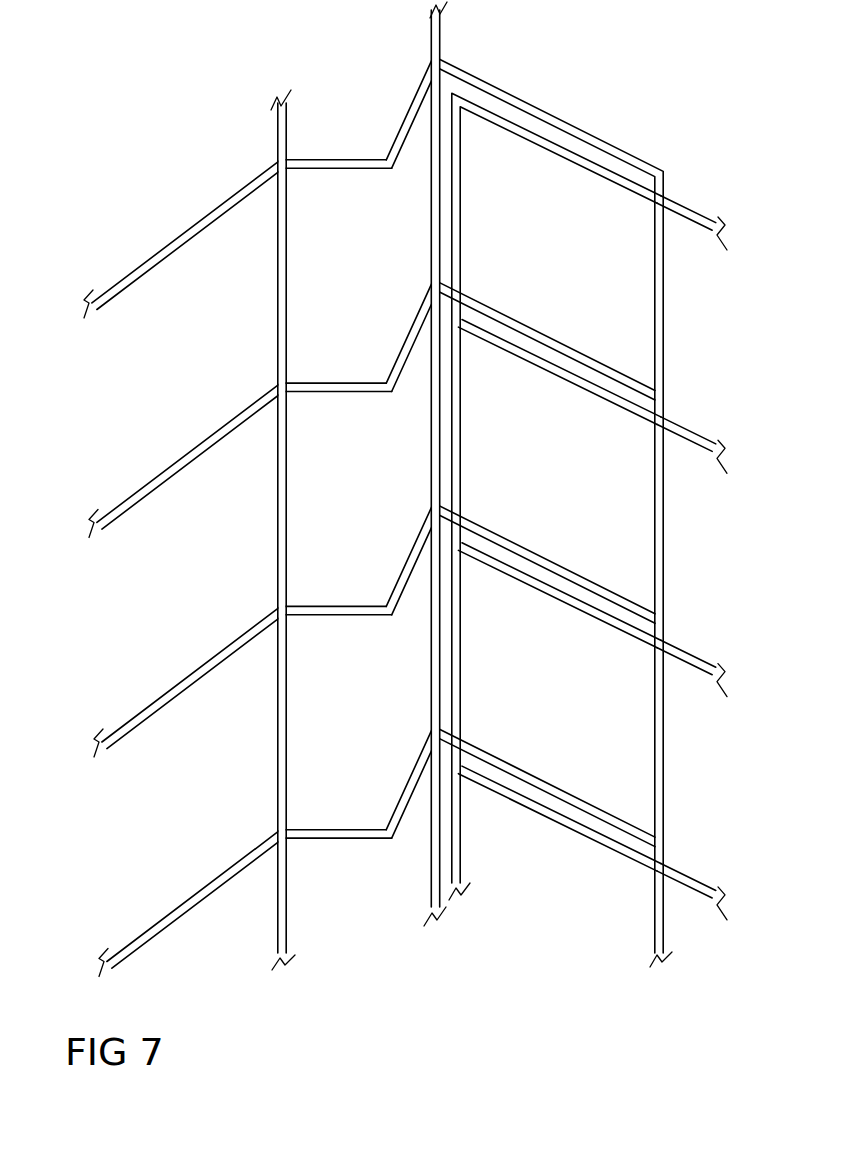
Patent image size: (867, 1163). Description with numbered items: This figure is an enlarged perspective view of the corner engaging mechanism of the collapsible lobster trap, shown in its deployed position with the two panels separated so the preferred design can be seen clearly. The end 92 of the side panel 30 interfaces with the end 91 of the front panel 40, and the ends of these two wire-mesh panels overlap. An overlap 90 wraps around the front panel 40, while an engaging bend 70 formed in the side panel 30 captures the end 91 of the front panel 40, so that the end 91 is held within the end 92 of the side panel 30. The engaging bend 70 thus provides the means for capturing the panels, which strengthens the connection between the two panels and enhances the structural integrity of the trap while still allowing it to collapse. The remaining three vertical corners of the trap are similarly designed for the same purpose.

The side panel 30 is at (195, 224).
The front end panel 40 is at (688, 211).
The engaging bend 70 is at (337, 383).
The overlap 90 is at (480, 77).
The end of the front panel 91 is at (572, 162).
The end of the side panel 92 is at (414, 105).